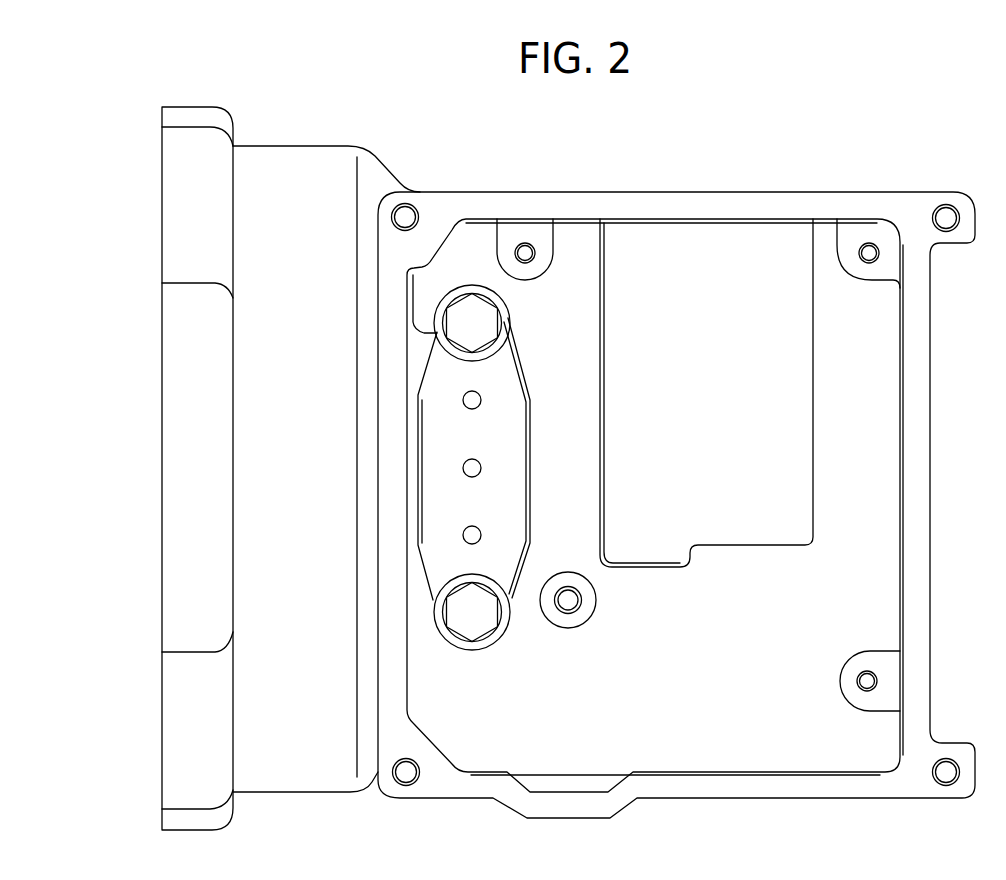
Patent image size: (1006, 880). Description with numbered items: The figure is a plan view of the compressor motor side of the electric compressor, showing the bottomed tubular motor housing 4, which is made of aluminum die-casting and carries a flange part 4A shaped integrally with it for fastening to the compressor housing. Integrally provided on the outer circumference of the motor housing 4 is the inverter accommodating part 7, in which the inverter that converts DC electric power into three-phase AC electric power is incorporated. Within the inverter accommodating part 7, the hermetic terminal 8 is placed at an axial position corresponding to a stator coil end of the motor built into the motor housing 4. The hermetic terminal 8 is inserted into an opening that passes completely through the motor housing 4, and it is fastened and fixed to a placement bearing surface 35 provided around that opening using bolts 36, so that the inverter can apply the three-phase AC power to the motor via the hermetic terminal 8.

The flange part 4A is at (190, 116).
The motor housing 4 is at (302, 176).
The inverter accommodating part 7 is at (698, 680).
The hermetic terminal 8 is at (493, 392).
The placement bearing surface 35 is at (533, 477).
The bolts 36 is at (480, 620).